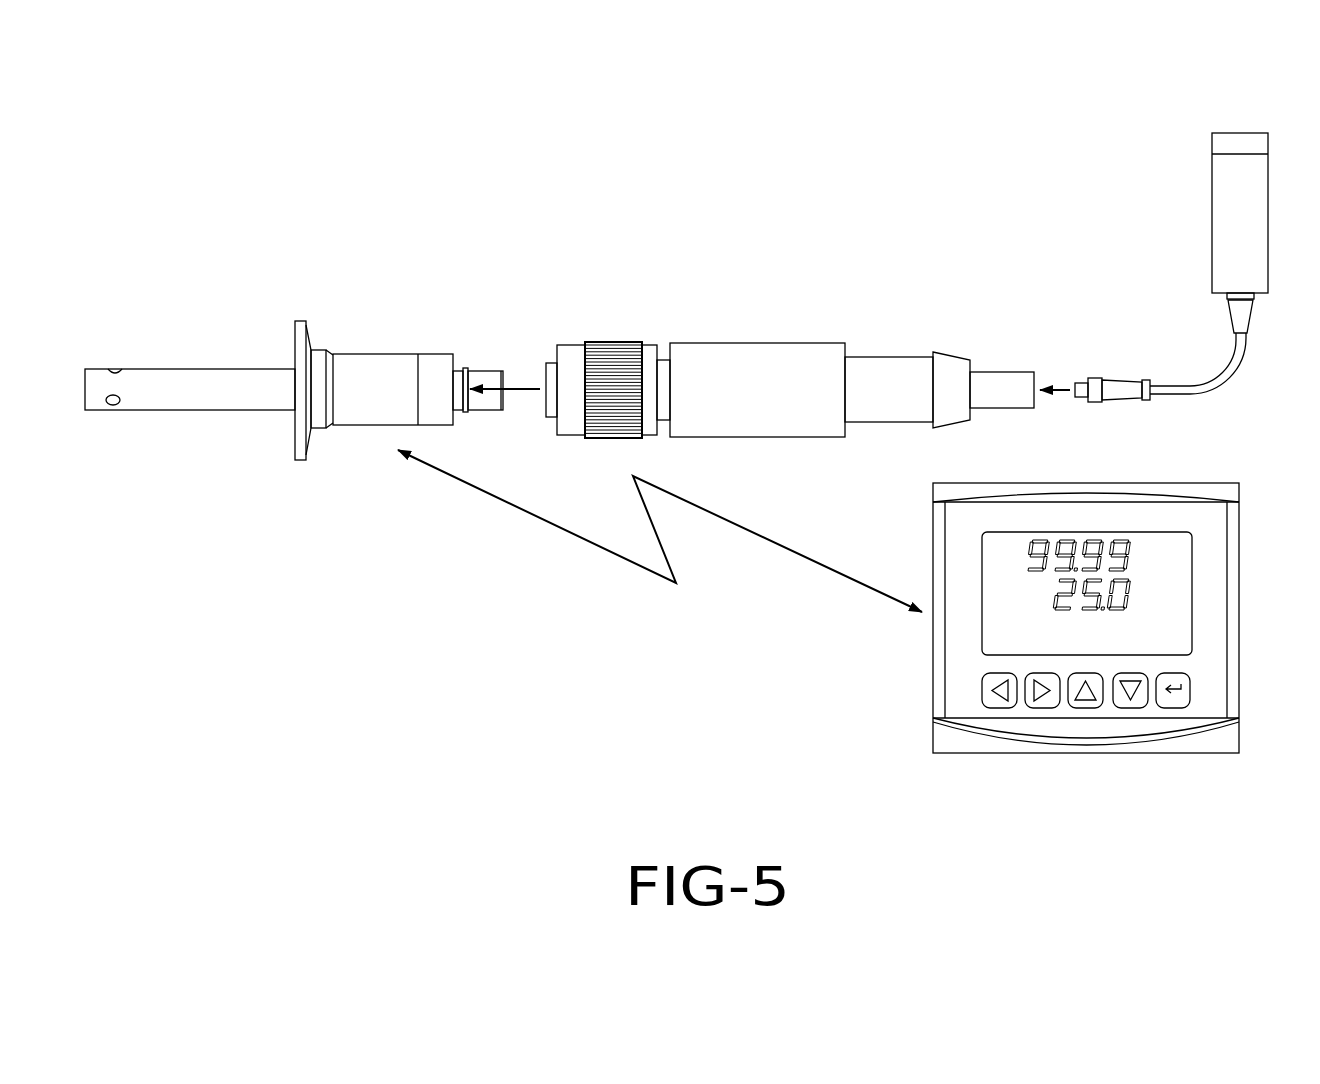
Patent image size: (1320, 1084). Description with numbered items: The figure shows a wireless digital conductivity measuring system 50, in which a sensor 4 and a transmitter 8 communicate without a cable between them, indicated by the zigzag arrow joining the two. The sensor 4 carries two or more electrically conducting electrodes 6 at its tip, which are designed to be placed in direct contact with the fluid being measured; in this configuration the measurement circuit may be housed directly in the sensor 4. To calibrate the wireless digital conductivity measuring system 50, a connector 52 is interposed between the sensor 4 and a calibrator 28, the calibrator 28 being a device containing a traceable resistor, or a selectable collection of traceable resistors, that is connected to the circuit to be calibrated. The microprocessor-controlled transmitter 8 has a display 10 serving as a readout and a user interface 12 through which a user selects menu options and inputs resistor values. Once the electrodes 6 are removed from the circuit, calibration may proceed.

The sensor 4 is at (294, 351).
The electrically conducting electrodes 6 is at (137, 395).
The transmitter 8 is at (1031, 665).
The display 10 is at (1142, 558).
The user interface 12 is at (972, 683).
The calibrator 28 is at (1190, 210).
The digital conductivity measuring system 50 is at (568, 218).
The connector 52 is at (831, 325).